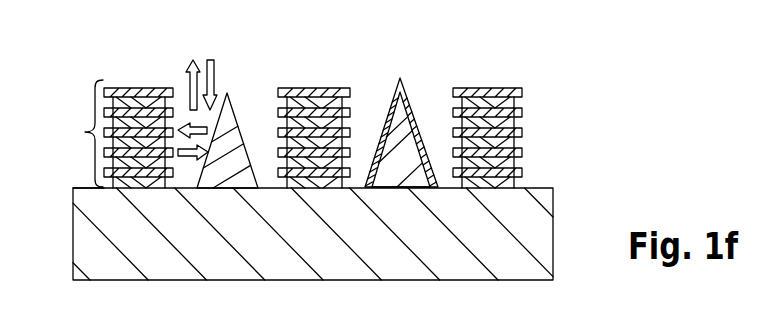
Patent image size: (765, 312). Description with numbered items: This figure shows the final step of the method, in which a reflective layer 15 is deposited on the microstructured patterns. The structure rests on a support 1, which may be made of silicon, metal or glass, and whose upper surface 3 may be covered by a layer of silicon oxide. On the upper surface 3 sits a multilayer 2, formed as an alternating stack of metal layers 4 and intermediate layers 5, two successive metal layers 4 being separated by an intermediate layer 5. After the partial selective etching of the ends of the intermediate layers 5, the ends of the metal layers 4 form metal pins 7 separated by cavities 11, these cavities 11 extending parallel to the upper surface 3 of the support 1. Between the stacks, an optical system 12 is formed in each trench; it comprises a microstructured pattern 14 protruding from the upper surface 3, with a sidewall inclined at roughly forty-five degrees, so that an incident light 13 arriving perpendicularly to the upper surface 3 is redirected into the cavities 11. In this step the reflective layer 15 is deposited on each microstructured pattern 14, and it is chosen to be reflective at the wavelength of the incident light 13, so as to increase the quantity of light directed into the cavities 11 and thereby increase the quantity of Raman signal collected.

The support 1 is at (540, 245).
The multilayer 2 is at (118, 134).
The upper surface 3 is at (82, 187).
The metal layer 4 is at (520, 112).
The intermediate layer 5 is at (512, 160).
The metal pin 7 is at (519, 93).
The cavity 11 is at (519, 102).
The optical system 12 is at (394, 102).
The incident light 13 is at (213, 70).
The microstructured pattern 14 is at (237, 118).
The reflective layer 15 is at (422, 118).